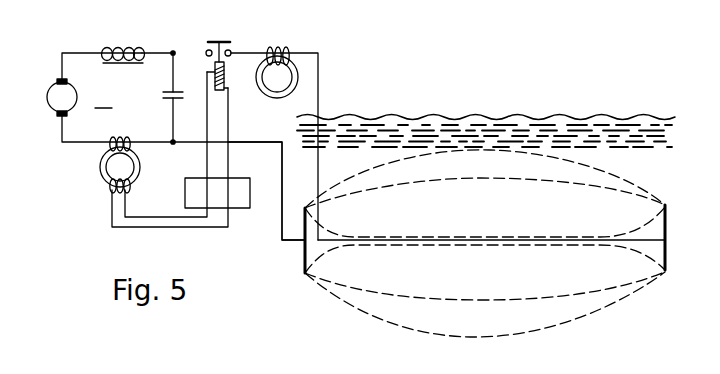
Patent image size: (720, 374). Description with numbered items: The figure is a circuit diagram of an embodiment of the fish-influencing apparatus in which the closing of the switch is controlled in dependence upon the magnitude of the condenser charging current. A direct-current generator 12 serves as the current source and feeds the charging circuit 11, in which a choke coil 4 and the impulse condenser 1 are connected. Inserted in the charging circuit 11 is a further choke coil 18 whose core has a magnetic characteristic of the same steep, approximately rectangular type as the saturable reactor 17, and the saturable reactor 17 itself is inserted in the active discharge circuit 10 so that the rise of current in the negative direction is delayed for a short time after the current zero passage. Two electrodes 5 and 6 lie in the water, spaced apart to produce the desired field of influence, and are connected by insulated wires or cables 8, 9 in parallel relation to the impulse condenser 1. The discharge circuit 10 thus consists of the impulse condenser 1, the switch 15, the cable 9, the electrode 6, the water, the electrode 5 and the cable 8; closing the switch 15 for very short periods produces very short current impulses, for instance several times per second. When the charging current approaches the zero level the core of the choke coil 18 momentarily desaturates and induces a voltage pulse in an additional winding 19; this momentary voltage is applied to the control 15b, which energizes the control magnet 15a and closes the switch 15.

The impulse condenser 1 is at (165, 97).
The choke coil 4 is at (133, 45).
The electrode 5 is at (303, 259).
The electrode 6 is at (676, 217).
The insulated wire or cable 8 is at (282, 218).
The insulated wire or cable 9 is at (457, 240).
The condenser discharge circuit 10 is at (309, 198).
The charging circuit 11 is at (108, 97).
The direct-current generator 12 is at (53, 105).
The switch 15 is at (219, 43).
The control magnet 15a is at (209, 68).
The control 15b is at (185, 192).
The saturable reactor 17 is at (285, 62).
The choke coil 18 is at (102, 160).
The additional winding 19 is at (115, 188).